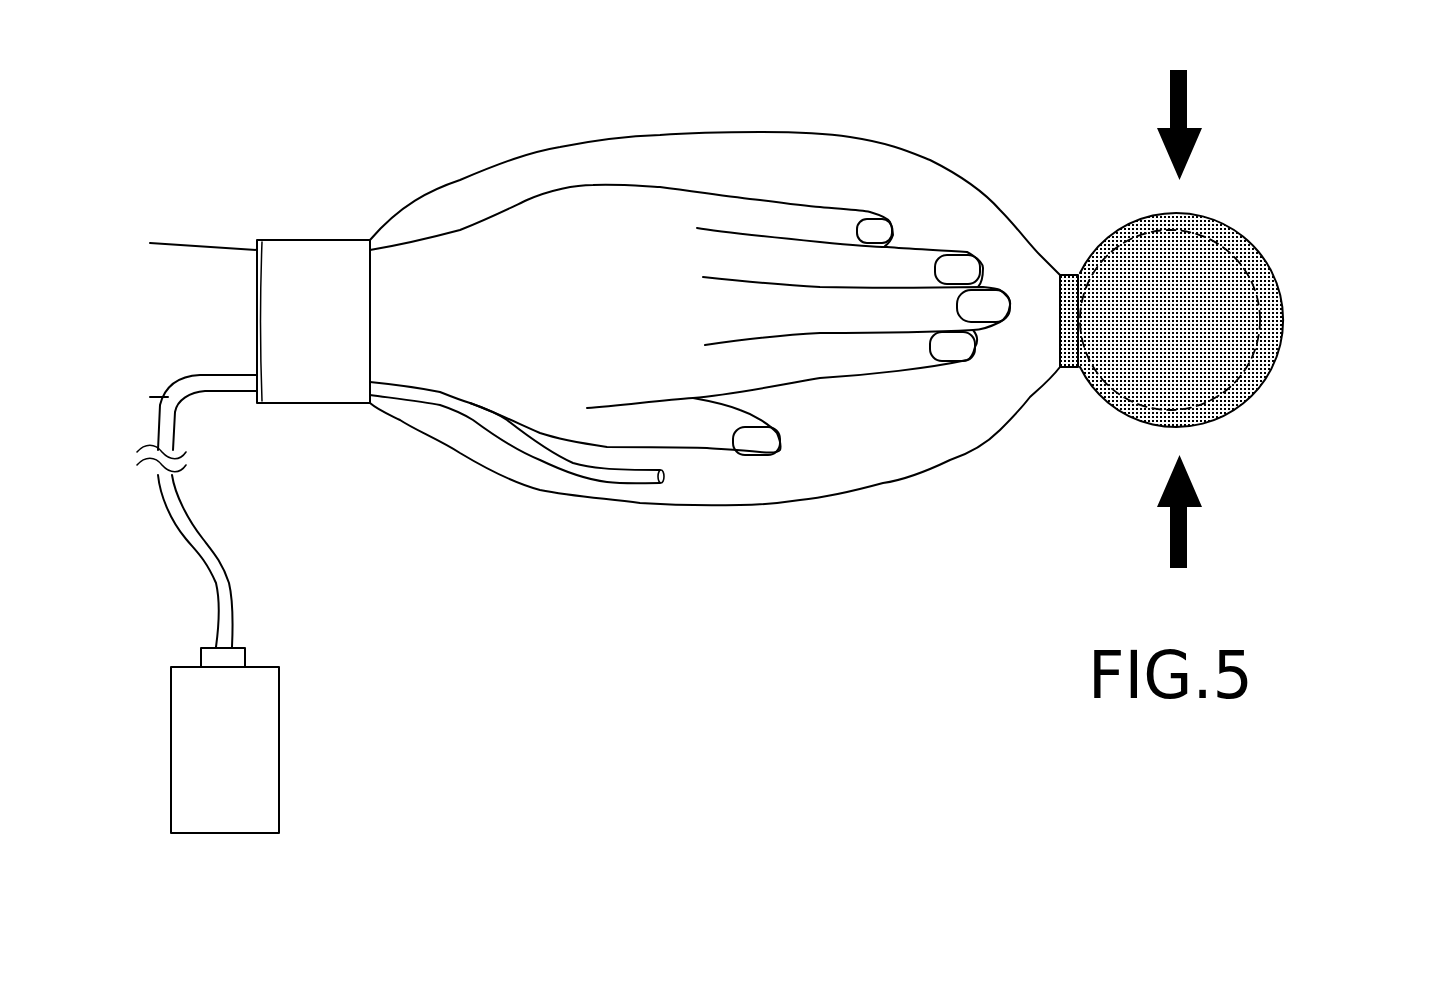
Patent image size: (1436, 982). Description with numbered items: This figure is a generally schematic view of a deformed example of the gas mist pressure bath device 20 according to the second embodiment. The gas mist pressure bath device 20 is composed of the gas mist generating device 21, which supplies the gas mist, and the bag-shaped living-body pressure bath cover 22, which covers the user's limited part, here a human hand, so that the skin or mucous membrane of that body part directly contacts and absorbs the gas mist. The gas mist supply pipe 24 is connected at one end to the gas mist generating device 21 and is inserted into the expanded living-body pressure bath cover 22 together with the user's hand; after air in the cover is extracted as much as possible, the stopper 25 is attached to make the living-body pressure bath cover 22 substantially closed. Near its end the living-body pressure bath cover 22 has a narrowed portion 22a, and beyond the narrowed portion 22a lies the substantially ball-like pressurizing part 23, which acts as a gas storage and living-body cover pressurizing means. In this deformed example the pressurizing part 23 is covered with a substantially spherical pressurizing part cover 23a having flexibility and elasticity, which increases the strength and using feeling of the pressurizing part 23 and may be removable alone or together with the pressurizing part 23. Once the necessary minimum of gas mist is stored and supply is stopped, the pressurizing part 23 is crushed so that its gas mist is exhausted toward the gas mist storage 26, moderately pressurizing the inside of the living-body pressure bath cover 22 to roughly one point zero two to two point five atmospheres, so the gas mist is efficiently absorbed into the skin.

The gas mist pressure bath device 20 is at (1347, 158).
The gas mist generating device 21 is at (263, 665).
The living-body pressure bath cover 22 is at (847, 143).
The narrowed portion 22a is at (1062, 273).
The pressurizing part 23 is at (1257, 287).
The pressurizing part cover 23a is at (1237, 228).
The gas mist supply pipe 24 is at (603, 482).
The stopper 25 is at (303, 240).
The gas mist storage 26 is at (873, 457).